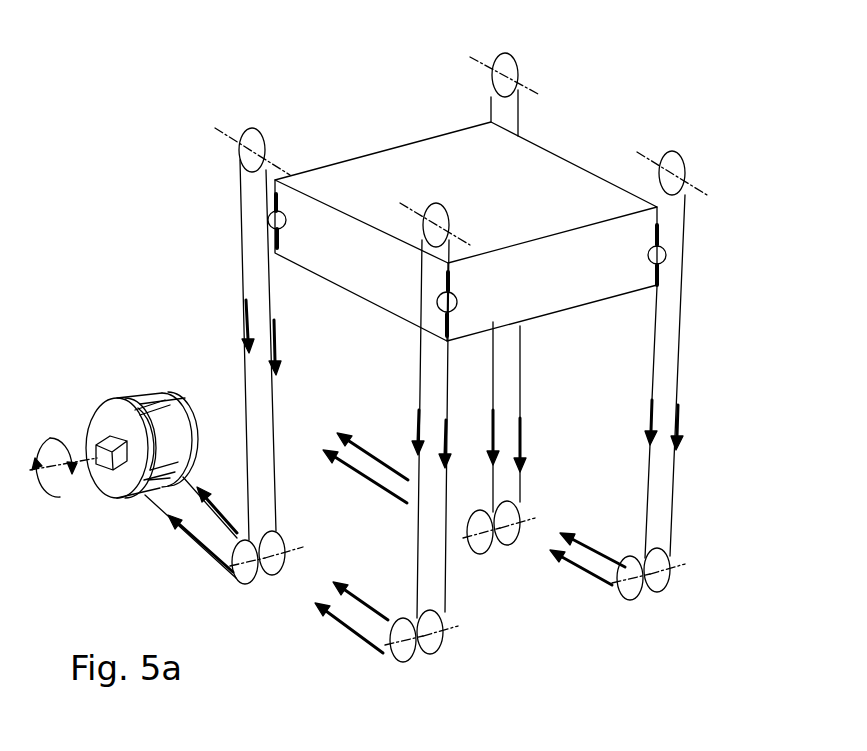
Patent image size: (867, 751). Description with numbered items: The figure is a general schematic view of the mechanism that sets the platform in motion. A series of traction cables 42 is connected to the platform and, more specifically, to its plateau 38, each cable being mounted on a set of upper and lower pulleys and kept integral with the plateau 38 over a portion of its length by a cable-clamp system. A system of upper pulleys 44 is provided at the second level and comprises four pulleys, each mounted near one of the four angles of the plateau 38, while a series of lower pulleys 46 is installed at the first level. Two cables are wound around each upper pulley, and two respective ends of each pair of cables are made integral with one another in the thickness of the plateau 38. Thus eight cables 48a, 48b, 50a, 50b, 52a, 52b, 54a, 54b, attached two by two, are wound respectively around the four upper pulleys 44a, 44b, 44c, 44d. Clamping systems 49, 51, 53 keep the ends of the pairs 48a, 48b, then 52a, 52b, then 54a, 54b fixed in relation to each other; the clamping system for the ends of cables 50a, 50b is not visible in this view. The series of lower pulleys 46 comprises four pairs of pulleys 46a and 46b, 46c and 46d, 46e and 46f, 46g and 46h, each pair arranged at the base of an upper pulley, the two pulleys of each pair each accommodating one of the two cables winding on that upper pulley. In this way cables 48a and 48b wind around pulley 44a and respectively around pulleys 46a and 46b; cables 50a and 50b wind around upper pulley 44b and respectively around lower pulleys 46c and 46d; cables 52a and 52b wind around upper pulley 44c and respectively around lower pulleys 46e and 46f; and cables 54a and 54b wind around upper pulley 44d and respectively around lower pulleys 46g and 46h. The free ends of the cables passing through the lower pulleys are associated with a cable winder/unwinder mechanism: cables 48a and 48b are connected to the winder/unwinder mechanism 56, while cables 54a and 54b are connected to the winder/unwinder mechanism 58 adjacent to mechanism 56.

The plateau 38 is at (560, 152).
The series of traction cables 42 is at (254, 350).
The system of upper pulleys 44 is at (465, 129).
The upper pulley 44a is at (252, 130).
The upper pulley 44b is at (505, 55).
The upper pulley 44c is at (672, 152).
The upper pulley 44d is at (438, 205).
The series of lower pulleys 46 is at (465, 602).
The lower pulley 46a is at (243, 584).
The lower pulley 46b is at (272, 576).
The lower pulley 46c is at (483, 548).
The lower pulley 46d is at (507, 540).
The lower pulley 46e is at (632, 596).
The lower pulley 46f is at (660, 590).
The lower pulley 46g is at (405, 660).
The lower pulley 46h is at (432, 652).
The cable 48a is at (241, 230).
The cable 48b is at (275, 272).
The clamping system 49 is at (305, 230).
The cable 50a is at (494, 490).
The cable 50b is at (522, 500).
The clamping system 51 is at (636, 263).
The cable 52a is at (656, 316).
The cable 52b is at (683, 274).
The clamping system 53 is at (472, 300).
The cable 54a is at (420, 346).
The cable 54b is at (448, 598).
The winder/unwinder mechanism 56 is at (112, 510).
The winder/unwinder mechanism 58 is at (185, 397).